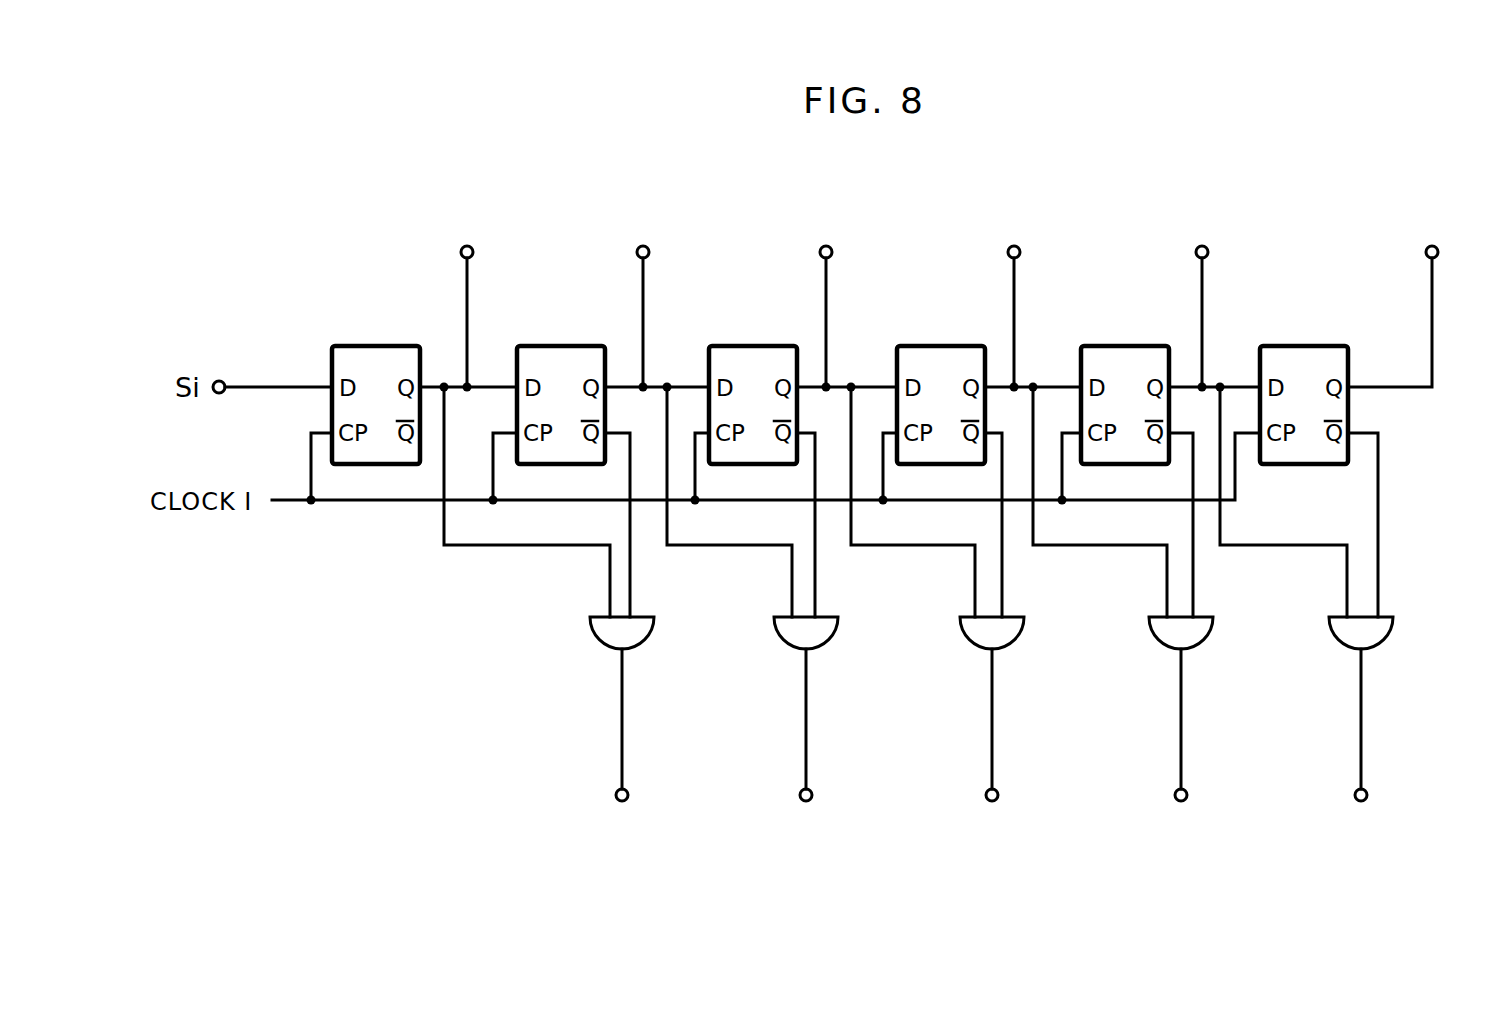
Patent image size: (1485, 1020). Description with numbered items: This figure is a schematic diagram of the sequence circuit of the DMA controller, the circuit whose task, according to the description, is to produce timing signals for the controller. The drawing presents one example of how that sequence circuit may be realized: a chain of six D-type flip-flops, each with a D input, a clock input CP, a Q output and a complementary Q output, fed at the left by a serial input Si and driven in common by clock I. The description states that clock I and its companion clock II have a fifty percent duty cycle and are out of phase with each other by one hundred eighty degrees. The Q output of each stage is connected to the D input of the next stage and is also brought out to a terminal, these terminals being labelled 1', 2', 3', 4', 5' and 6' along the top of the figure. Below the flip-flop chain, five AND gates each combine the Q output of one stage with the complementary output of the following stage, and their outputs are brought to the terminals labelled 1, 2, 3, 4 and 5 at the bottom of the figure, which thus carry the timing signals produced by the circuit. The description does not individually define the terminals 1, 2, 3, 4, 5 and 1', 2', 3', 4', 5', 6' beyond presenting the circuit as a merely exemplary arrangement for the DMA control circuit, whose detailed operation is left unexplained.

The AND gate output terminal 1 is at (549, 616).
The AND gate output terminal 2 is at (752, 616).
The AND gate output terminal 3 is at (937, 616).
The AND gate output terminal 4 is at (1123, 616).
The AND gate output terminal 5 is at (1306, 616).
The flip-flop Q output terminal 1' is at (467, 294).
The flip-flop Q output terminal 2' is at (643, 294).
The flip-flop Q output terminal 3' is at (826, 294).
The flip-flop Q output terminal 4' is at (1014, 294).
The flip-flop Q output terminal 5' is at (1202, 294).
The flip-flop Q output terminal 6' is at (1396, 294).